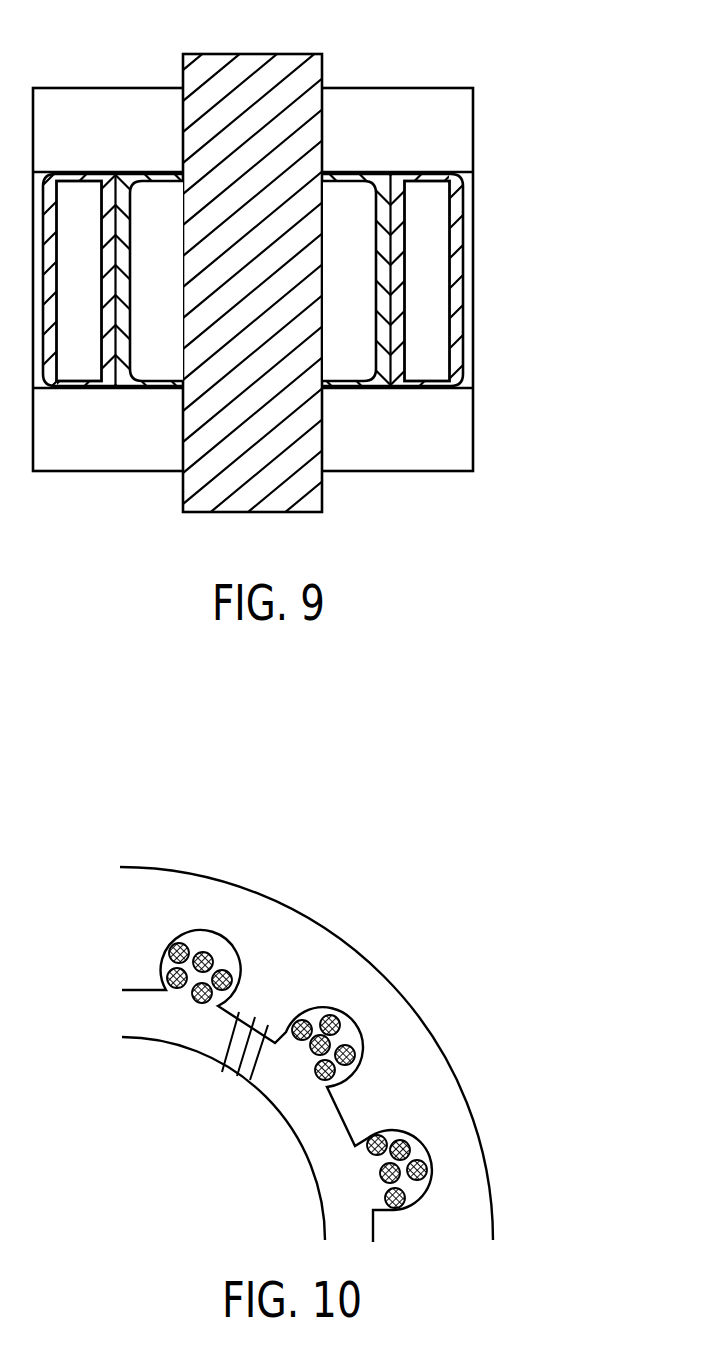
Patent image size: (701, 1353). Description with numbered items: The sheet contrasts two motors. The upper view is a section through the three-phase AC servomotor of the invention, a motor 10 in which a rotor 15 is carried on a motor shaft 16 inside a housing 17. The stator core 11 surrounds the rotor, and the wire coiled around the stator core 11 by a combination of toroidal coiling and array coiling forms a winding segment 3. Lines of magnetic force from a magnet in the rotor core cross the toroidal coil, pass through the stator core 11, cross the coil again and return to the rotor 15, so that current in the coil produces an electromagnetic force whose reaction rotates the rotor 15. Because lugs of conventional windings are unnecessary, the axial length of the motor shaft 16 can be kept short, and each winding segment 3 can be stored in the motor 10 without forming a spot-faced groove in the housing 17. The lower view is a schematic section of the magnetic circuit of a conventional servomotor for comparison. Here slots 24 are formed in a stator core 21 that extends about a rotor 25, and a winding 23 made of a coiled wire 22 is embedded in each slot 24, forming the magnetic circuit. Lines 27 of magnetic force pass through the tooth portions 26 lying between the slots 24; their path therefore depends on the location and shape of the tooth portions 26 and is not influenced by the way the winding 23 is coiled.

In FIG. 9, the winding segment 3 is at (452, 225).
In FIG. 9, the motor 10 is at (494, 298).
In FIG. 9, the stator core 11 is at (418, 186).
In FIG. 9, the rotor 15 is at (341, 186).
In FIG. 9, the motor shaft 16 is at (243, 64).
In FIG. 9, the housing 17 is at (458, 435).
In FIG. 10, the stator core 21 is at (145, 890).
In FIG. 10, the coiled wire 22 is at (203, 952).
In FIG. 10, the winding 23 is at (327, 990).
In FIG. 10, the slot 24 is at (346, 1014).
In FIG. 10, the rotor 25 is at (137, 1083).
In FIG. 10, the tooth portion 26 is at (352, 1104).
In FIG. 10, the line of magnetic force 27 is at (260, 995).